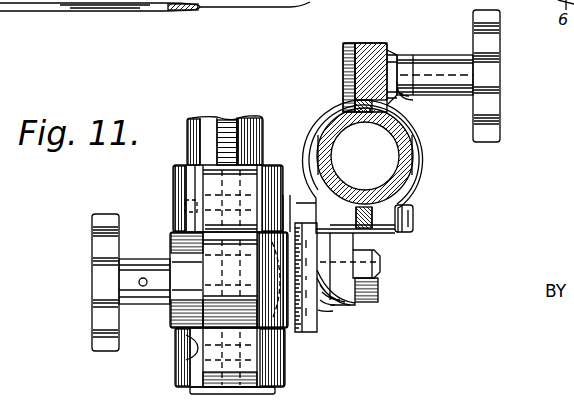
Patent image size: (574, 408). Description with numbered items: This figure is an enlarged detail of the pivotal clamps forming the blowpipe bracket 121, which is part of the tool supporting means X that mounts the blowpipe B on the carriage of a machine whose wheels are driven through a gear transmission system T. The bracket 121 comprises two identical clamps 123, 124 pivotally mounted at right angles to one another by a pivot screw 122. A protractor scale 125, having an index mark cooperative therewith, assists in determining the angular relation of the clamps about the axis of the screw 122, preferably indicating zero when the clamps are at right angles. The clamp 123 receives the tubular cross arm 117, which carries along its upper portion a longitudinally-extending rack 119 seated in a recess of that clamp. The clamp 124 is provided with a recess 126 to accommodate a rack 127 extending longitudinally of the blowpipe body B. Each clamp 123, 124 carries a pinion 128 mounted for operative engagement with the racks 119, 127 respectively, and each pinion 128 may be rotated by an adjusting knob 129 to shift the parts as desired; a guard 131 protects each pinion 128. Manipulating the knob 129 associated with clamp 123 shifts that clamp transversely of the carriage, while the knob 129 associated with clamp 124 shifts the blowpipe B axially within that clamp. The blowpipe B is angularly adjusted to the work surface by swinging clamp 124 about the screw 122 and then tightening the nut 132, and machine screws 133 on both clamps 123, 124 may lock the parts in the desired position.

The gear transmission system T is at (45, 8).
The rack 119 is at (232, 142).
The cross arm 117 is at (188, 150).
The clamp 123 is at (173, 195).
The machine screw 133 is at (407, 218).
The pinion 128 is at (92, 268).
The guard 131 is at (370, 45).
The recess 126 is at (352, 103).
The rack 127 is at (374, 107).
The adjusting knob 129 is at (487, 78).
The clamp 124 is at (412, 190).
The blowpipe B is at (408, 162).
The tool supporting means X is at (393, 243).
The pivot screw 122 is at (383, 268).
The nut 132 is at (368, 292).
The blowpipe bracket 121 is at (357, 307).
The protractor scale 125 is at (301, 332).